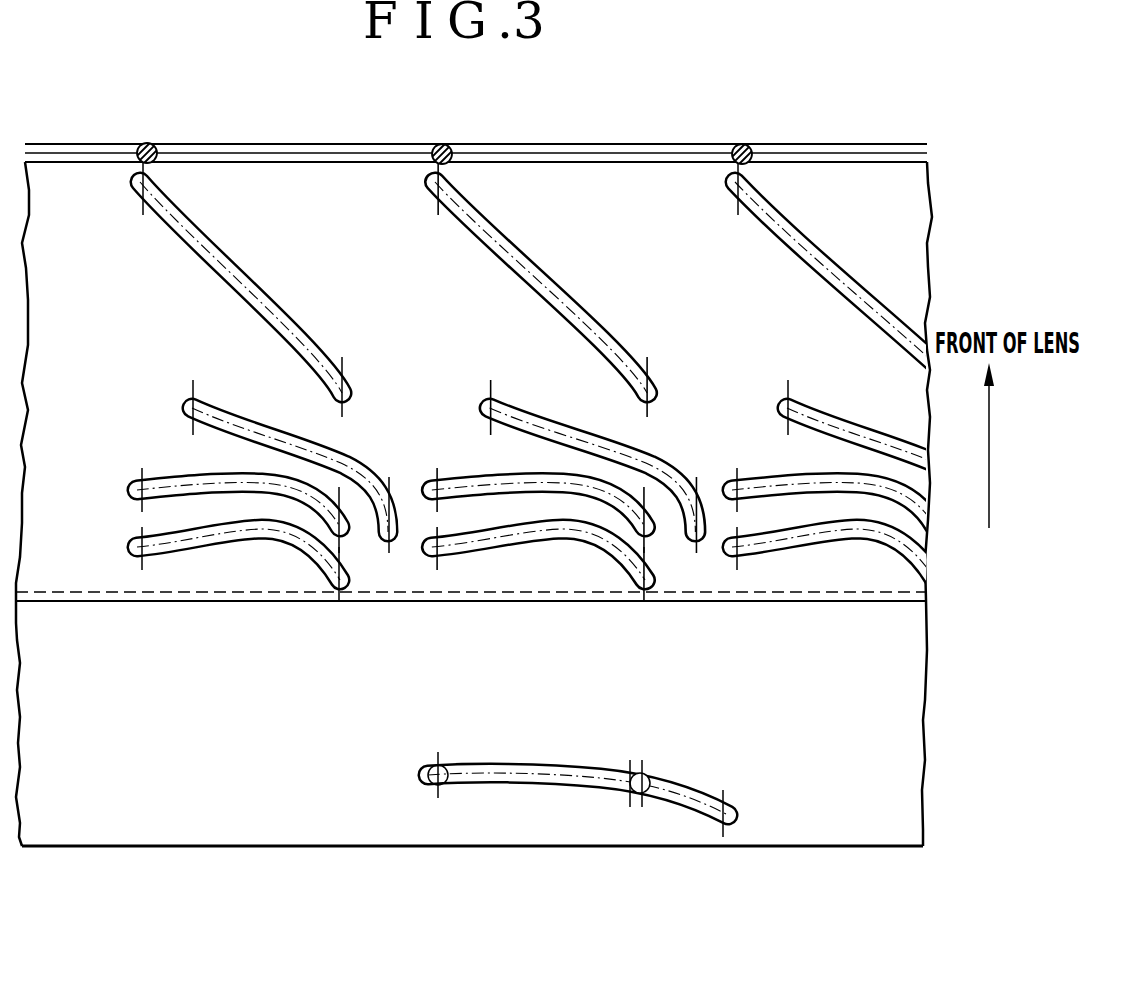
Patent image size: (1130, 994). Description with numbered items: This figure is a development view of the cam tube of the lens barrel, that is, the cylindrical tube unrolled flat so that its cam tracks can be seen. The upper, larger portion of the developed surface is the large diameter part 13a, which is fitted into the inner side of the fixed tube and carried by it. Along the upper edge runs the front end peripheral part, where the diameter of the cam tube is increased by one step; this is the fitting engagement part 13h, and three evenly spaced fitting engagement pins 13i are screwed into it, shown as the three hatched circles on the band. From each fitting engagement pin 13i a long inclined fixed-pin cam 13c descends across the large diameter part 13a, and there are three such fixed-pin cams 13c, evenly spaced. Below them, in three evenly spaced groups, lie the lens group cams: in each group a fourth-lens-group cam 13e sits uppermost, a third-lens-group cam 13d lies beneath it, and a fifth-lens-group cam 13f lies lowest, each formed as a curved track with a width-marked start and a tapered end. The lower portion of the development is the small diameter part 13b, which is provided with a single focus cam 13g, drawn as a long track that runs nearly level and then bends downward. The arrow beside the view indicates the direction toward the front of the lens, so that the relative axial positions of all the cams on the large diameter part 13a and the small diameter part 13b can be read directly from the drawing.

The large diameter part 13a is at (598, 193).
The small diameter part 13b is at (882, 717).
The fixed-pin cam 13c is at (272, 302).
The third-lens-group cam 13d is at (172, 477).
The fourth-lens-group cam 13e is at (253, 430).
The fifth-lens-group cam 13f is at (182, 557).
The focus cam 13g is at (537, 763).
The fitting engagement part 13h is at (288, 143).
The fitting engagement pin 13i is at (158, 141).